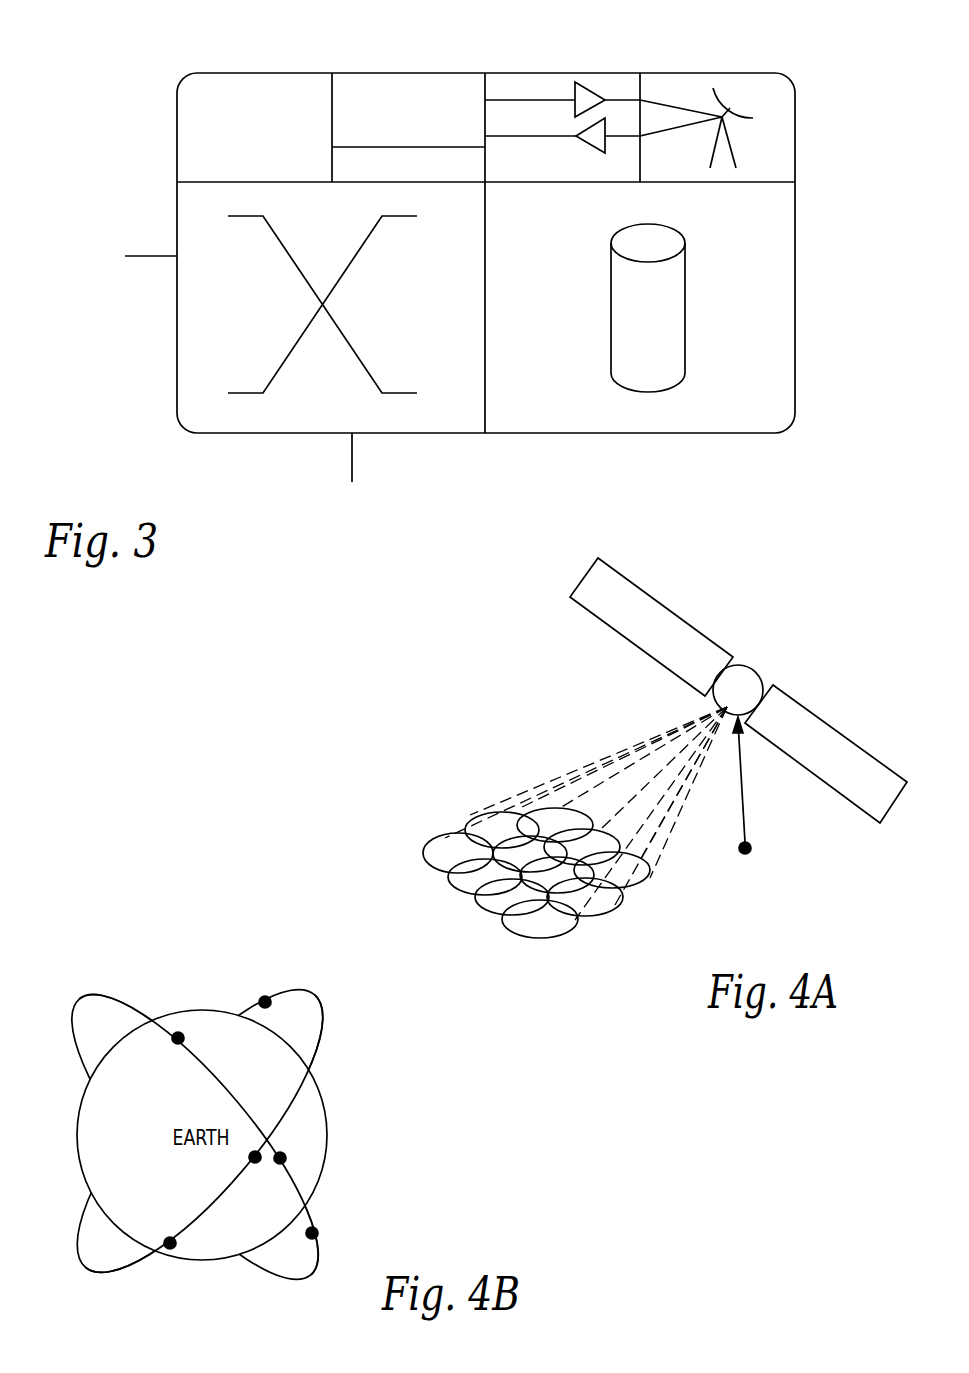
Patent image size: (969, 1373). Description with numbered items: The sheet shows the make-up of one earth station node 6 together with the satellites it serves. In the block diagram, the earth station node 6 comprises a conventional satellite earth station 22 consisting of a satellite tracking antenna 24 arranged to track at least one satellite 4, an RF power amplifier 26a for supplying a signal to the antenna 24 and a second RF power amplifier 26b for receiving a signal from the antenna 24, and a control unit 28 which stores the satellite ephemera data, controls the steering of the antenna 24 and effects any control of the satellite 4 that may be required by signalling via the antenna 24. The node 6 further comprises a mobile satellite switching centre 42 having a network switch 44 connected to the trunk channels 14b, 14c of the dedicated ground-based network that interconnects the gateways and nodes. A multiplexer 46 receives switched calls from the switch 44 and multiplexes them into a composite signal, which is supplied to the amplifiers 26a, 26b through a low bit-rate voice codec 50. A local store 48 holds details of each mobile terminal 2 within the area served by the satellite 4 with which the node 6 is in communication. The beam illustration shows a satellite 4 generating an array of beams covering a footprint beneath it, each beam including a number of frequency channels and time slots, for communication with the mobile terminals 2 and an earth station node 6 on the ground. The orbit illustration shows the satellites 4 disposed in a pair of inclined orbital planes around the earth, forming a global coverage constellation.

In FIG. 4A, the mobile terminal 2 is at (497, 828).
In FIG. 4A, the satellite 4 is at (757, 668).
In FIG. 4B, the satellite 4 is at (286, 1160).
In FIG. 4A, the earth station node 6 is at (752, 850).
In FIG. 3, the channel 14b is at (135, 258).
In FIG. 3, the channel 14c is at (352, 473).
In FIG. 3, the satellite earth station 22 is at (163, 75).
In FIG. 3, the satellite tracking antenna 24 is at (795, 137).
In FIG. 3, the RF power amplifier 26a is at (575, 90).
In FIG. 3, the RF power amplifier 26b is at (581, 150).
In FIG. 3, the control unit 28 is at (262, 73).
In FIG. 3, the mobile satellite switching centre 42 is at (802, 180).
In FIG. 3, the network switch 44 is at (248, 420).
In FIG. 3, the multiplexer 46 is at (403, 73).
In FIG. 3, the local store 48 is at (685, 298).
In FIG. 3, the low bit-rate voice codec 50 is at (453, 183).